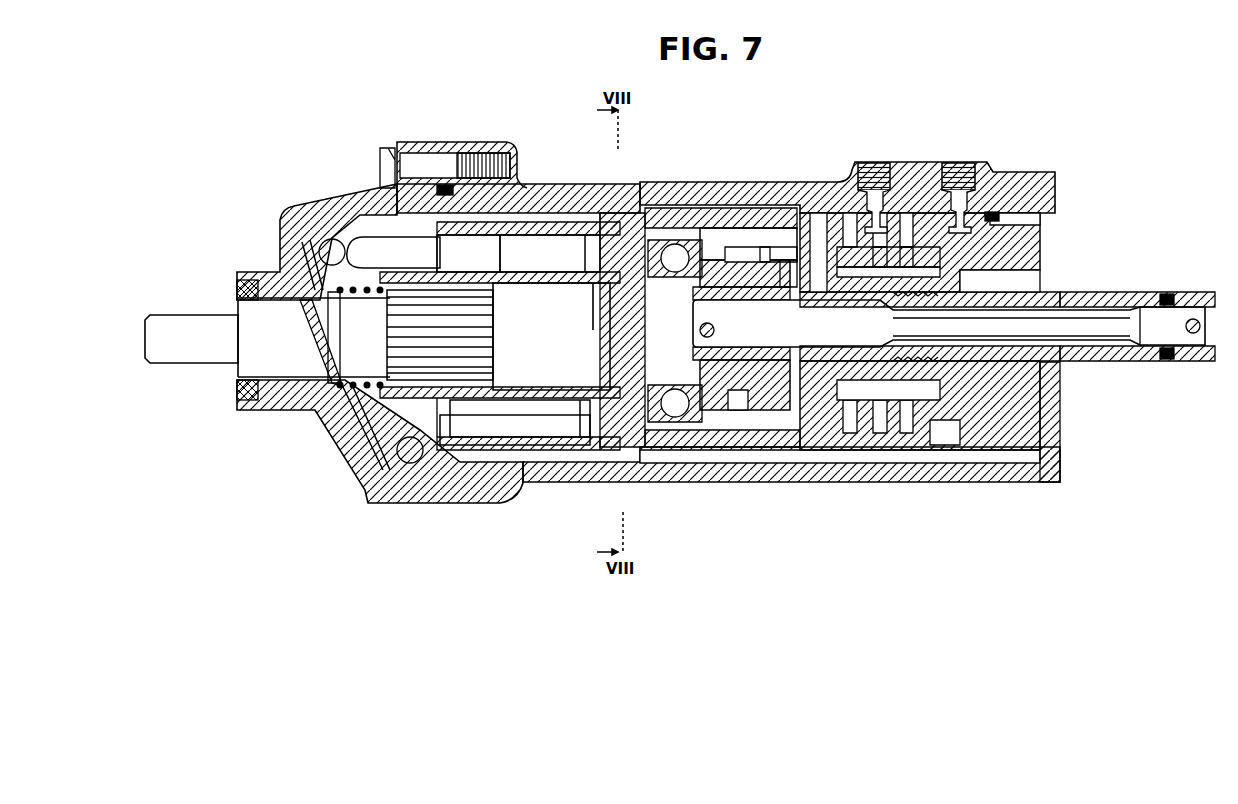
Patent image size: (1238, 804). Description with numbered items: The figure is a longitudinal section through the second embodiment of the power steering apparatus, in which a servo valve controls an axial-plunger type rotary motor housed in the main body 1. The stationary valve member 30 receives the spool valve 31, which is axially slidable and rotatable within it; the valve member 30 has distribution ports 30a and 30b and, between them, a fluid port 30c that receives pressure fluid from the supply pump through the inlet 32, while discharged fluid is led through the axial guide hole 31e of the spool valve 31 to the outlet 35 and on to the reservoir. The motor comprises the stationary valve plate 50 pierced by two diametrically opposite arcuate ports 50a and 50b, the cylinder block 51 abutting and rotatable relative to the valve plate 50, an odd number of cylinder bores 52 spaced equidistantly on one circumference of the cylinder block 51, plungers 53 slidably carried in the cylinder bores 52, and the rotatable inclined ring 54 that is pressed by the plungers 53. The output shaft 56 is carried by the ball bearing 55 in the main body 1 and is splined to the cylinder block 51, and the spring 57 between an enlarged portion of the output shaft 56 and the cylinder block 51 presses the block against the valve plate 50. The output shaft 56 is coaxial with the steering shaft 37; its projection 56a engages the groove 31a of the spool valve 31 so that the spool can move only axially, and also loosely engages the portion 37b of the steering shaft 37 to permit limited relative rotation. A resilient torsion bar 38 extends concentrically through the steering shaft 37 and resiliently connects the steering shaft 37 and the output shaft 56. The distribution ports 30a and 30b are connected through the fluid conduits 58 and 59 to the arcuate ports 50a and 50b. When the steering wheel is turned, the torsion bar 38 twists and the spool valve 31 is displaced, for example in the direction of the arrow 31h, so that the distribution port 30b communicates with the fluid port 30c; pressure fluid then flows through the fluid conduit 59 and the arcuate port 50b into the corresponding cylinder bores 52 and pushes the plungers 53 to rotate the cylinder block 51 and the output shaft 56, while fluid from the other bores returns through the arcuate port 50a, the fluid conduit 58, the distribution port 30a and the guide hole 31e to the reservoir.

The main body 1 is at (718, 473).
The valve member 30 is at (943, 383).
The distribution port 30a is at (852, 200).
The distribution port 30b is at (890, 220).
The fluid port 30c is at (890, 240).
The spool valve 31 is at (870, 393).
The radial slot 31a is at (815, 263).
The axial guide hole 31e is at (925, 260).
The arrow 31h is at (937, 430).
The inlet 32 is at (877, 163).
The outlet 35 is at (948, 170).
The steering shaft 37 is at (1070, 367).
The portion of steering shaft 37b is at (757, 178).
The torsion bar 38 is at (1087, 327).
The valve plate 50 is at (613, 232).
The arcuate port 50a is at (610, 218).
The arcuate port 50b is at (613, 452).
The cylinder block 51 is at (540, 443).
The cylinder bore 52 is at (533, 247).
The plunger 53 is at (387, 252).
The inclined ring 54 is at (362, 453).
The ball bearing 55 is at (660, 240).
The output shaft 56 is at (498, 336).
The projection 56a is at (798, 215).
The spring 57 is at (337, 392).
The fluid conduit 58 is at (710, 200).
The fluid conduit 59 is at (763, 460).